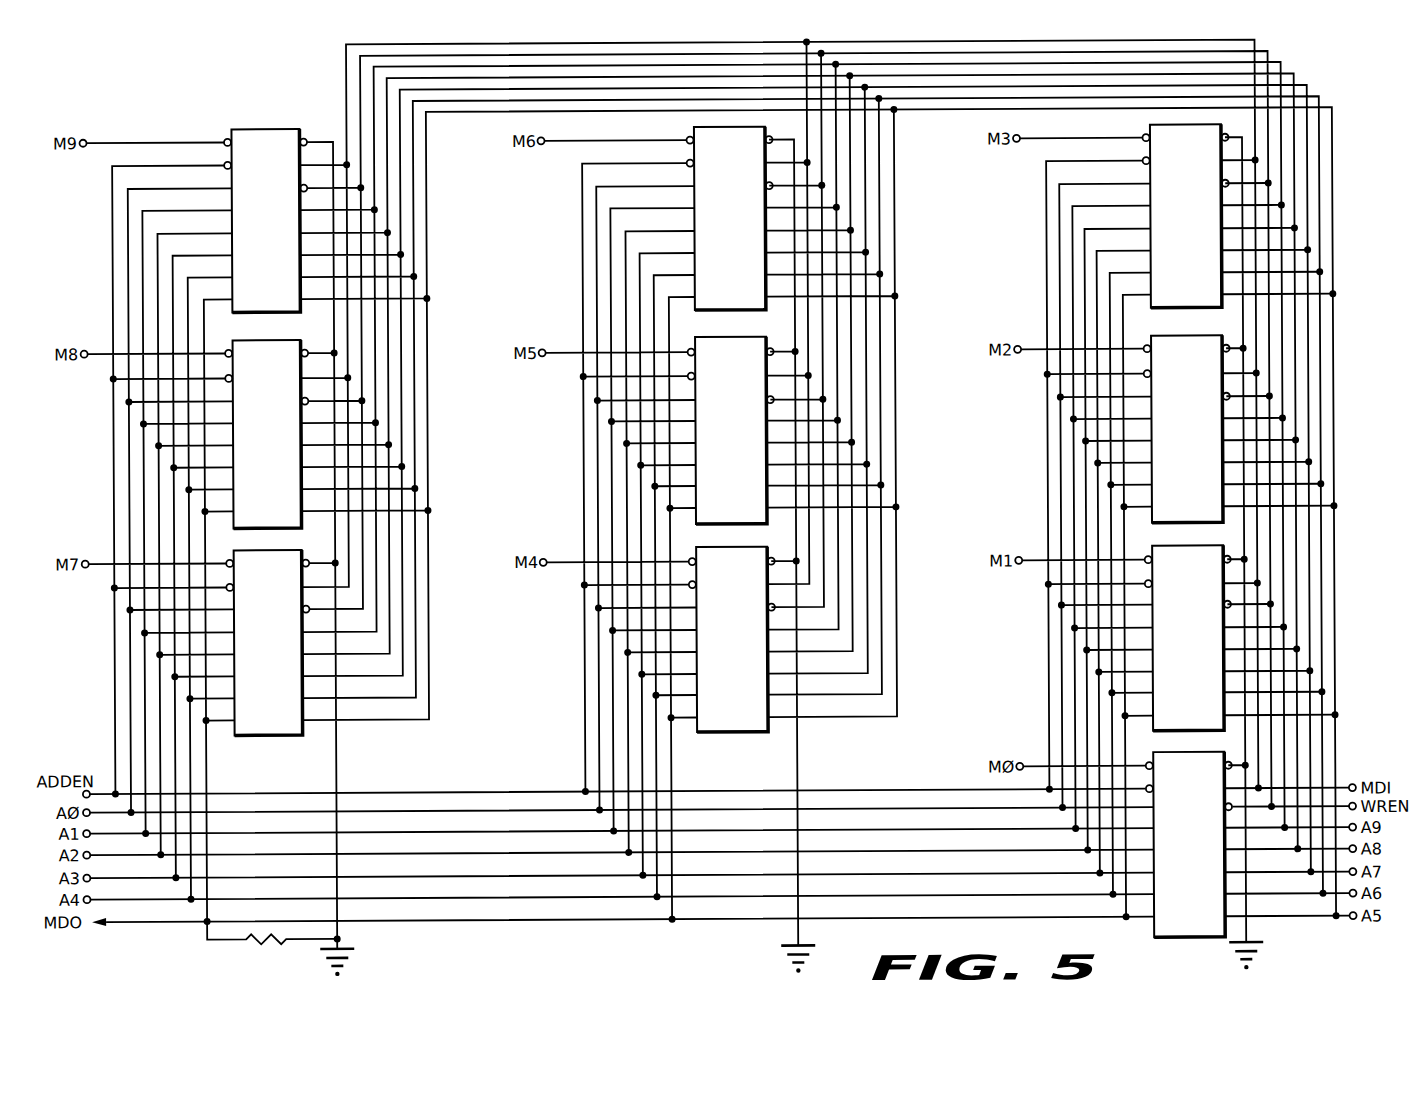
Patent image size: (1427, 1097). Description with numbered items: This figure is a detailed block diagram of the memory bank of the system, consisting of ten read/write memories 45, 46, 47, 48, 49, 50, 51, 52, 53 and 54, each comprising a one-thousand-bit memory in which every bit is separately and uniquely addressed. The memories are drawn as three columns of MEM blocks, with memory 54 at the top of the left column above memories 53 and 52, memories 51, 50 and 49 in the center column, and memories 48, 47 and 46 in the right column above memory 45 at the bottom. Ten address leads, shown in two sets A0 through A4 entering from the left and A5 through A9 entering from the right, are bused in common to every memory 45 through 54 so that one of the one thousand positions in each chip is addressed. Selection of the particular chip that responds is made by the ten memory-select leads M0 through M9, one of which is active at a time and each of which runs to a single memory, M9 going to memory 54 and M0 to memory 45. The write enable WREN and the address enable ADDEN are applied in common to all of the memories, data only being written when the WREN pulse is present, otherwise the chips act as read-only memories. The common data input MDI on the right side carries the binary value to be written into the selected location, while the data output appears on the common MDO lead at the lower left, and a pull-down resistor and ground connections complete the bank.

The read/write memory 45 is at (1189, 940).
The read/write memory 46 is at (1186, 734).
The read/write memory 47 is at (1191, 526).
The read/write memory 48 is at (1191, 311).
The read/write memory 49 is at (733, 733).
The read/write memory 50 is at (733, 525).
The read/write memory 51 is at (733, 311).
The read/write memory 52 is at (270, 734).
The read/write memory 53 is at (270, 527).
The read/write memory 54 is at (270, 311).